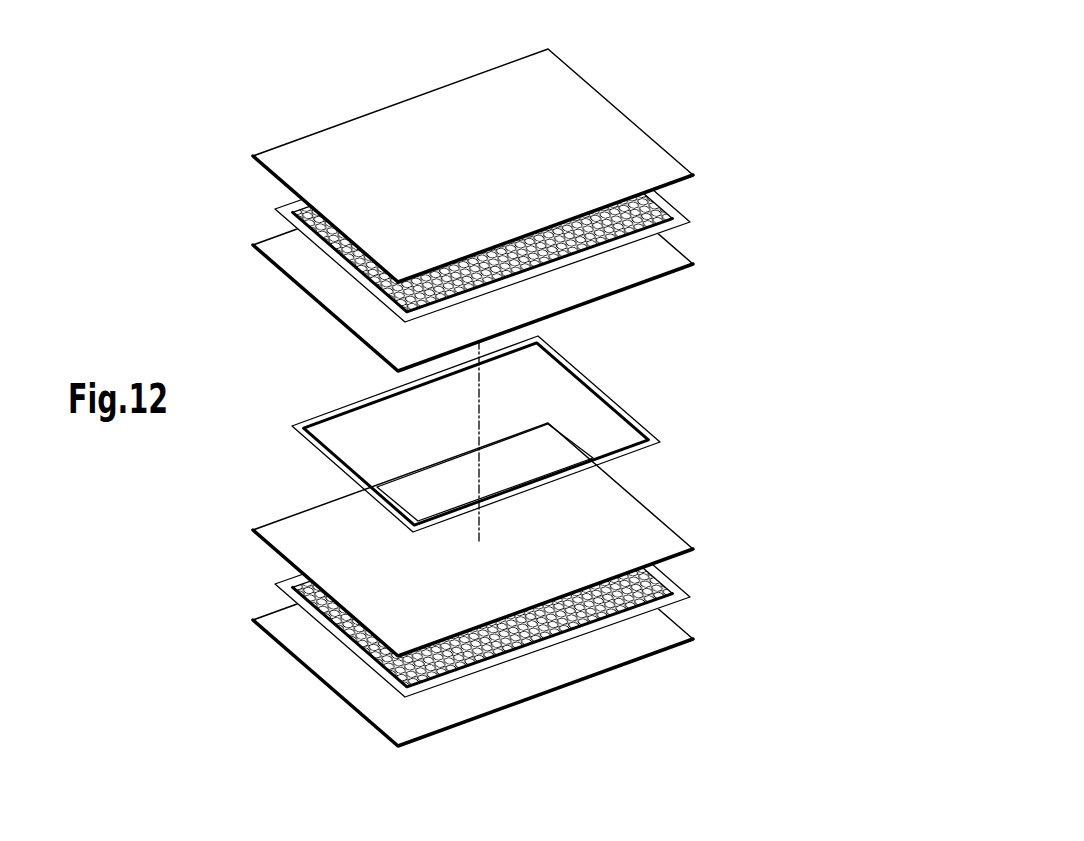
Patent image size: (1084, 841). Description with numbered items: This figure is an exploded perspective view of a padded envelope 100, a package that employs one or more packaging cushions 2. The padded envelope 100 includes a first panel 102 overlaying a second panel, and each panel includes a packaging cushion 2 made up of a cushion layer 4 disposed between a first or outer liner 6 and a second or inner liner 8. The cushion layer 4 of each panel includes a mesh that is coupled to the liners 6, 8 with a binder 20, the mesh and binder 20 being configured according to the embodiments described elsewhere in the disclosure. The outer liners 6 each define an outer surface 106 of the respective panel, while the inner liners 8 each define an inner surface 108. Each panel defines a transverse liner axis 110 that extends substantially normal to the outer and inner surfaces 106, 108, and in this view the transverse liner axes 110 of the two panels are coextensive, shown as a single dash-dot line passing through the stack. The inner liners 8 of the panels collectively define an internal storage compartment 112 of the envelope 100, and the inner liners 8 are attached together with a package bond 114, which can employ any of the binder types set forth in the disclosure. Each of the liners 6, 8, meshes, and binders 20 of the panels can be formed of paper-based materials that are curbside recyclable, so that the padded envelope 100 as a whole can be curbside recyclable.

The packaging cushion 2 is at (178, 386).
The first panel 102 is at (238, 155).
The cushion layer 4 is at (700, 222).
The outer liner 6 is at (486, 390).
The inner liner 8 is at (461, 397).
The binder 20 is at (320, 248).
The padded envelope 100 is at (807, 670).
The outer surface 106 is at (552, 105).
The inner surface 108 is at (588, 519).
The transverse liner axis 110 is at (480, 418).
The internal storage compartment 112 is at (561, 408).
The package bond 114 is at (353, 410).